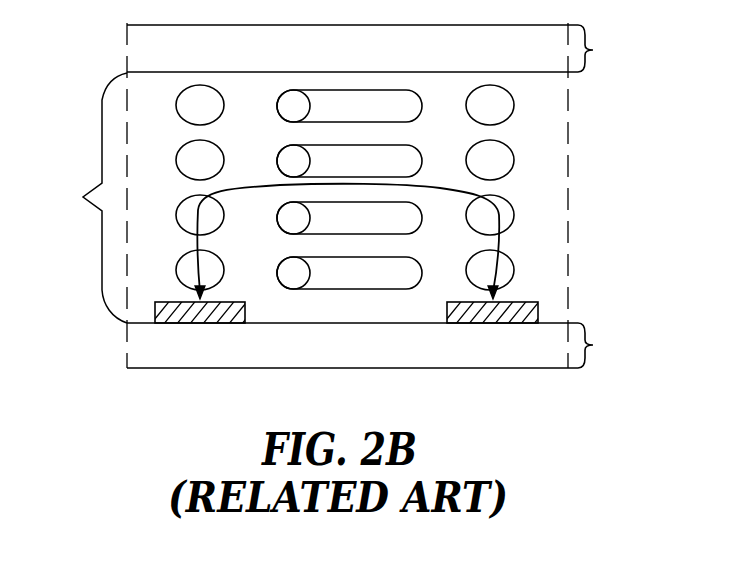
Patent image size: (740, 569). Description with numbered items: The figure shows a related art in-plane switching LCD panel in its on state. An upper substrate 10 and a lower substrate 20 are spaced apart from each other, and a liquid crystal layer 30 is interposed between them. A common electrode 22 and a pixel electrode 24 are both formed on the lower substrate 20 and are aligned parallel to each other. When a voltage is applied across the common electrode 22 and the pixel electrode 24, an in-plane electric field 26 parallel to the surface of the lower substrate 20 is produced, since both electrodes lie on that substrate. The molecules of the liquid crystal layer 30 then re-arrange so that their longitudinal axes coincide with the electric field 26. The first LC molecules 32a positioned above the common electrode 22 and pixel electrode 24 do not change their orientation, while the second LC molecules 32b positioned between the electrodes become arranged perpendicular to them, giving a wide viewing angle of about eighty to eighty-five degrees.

The upper substrate 10 is at (593, 50).
The lower substrate 20 is at (593, 345).
The common electrode 22 is at (207, 323).
The pixel electrode 24 is at (492, 323).
The electric field 26 is at (460, 186).
The liquid crystal layer 30 is at (281, 198).
The first LC molecules 32a is at (185, 163).
The second LC molecules 32b is at (287, 157).